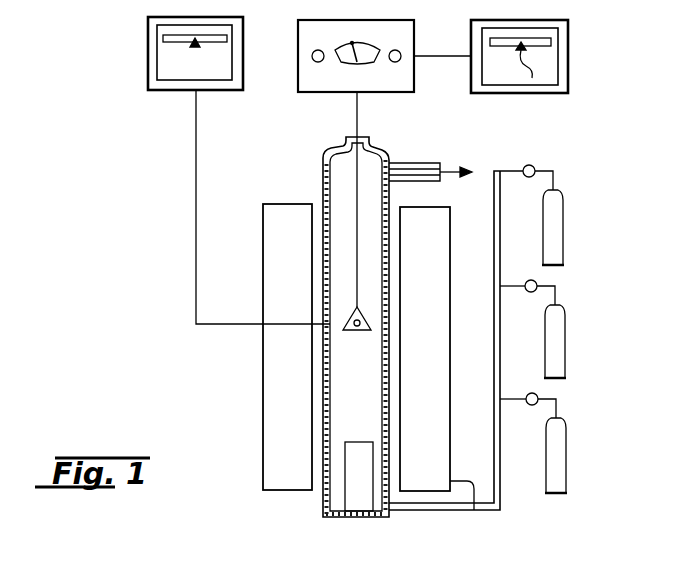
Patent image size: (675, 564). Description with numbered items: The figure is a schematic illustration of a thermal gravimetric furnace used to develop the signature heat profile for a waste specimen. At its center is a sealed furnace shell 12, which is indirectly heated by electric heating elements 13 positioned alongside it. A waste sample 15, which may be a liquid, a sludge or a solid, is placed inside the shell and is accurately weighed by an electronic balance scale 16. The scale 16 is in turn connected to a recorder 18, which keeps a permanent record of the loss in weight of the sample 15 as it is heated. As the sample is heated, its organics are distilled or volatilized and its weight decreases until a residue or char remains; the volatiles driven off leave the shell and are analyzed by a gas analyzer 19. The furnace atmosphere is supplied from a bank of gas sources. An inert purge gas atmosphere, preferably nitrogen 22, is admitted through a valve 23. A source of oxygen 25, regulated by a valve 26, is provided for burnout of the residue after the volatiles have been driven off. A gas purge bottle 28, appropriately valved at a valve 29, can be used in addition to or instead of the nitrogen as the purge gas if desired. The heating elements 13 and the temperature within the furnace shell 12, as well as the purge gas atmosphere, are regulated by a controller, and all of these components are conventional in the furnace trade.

The sealed furnace shell 12 is at (323, 497).
The electric heating elements 13 is at (469, 511).
The waste sample 15 is at (352, 332).
The electronic balance scale 16 is at (298, 30).
The recorder 18 is at (563, 63).
The gas analyzer 19 is at (418, 163).
The nitrogen 22 is at (567, 337).
The valve 23 is at (538, 280).
The source of oxygen 25 is at (565, 212).
The valve 26 is at (536, 165).
The gas purge bottle 28 is at (567, 450).
The valve 29 is at (539, 393).